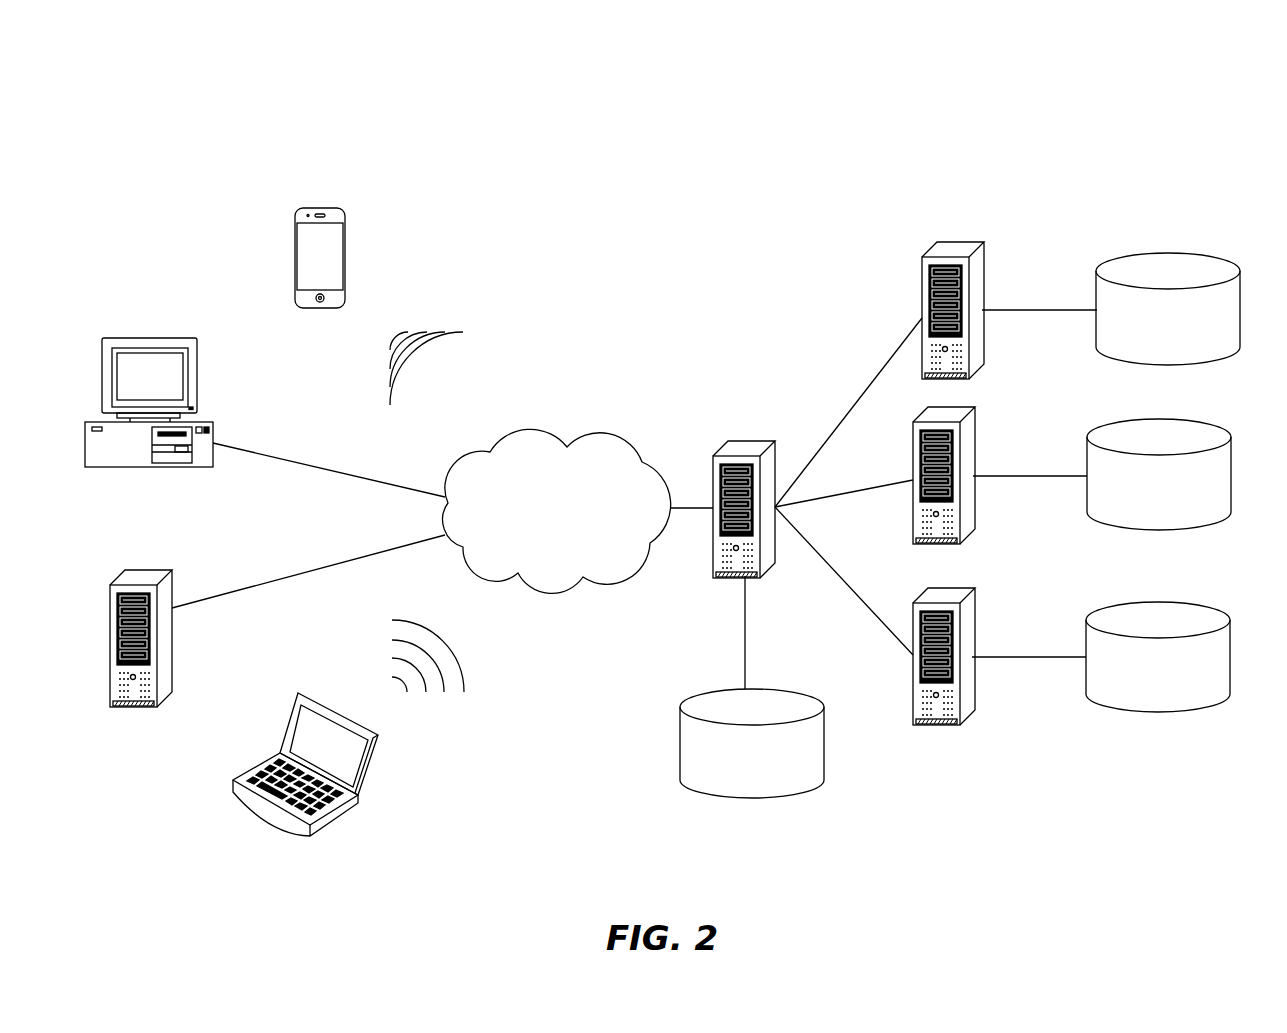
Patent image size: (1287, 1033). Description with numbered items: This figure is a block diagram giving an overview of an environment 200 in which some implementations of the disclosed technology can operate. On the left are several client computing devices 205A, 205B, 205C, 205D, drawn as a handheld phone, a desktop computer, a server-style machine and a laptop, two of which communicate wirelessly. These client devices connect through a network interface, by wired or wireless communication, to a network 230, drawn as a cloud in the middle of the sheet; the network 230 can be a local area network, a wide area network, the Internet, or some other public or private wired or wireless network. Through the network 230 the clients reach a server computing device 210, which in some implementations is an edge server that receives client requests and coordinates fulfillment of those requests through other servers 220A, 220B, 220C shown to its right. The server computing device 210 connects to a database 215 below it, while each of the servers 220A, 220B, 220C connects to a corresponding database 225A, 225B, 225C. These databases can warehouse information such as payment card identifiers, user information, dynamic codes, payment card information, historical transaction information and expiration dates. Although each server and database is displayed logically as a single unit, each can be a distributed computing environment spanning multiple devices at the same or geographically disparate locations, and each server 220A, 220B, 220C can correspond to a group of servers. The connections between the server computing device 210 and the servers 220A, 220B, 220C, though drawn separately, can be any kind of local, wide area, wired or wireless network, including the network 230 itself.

The environment 200 is at (1040, 123).
The client computing device 205A is at (336, 206).
The client computing device 205B is at (192, 338).
The client computing device 205C is at (163, 570).
The client computing device 205D is at (382, 740).
The server computing device 210 is at (755, 441).
The database 215 is at (805, 694).
The server 220A is at (983, 244).
The server 220B is at (974, 410).
The server 220C is at (973, 590).
The database 225A is at (1166, 254).
The database 225B is at (1156, 419).
The database 225C is at (1152, 602).
The network 230 is at (608, 433).